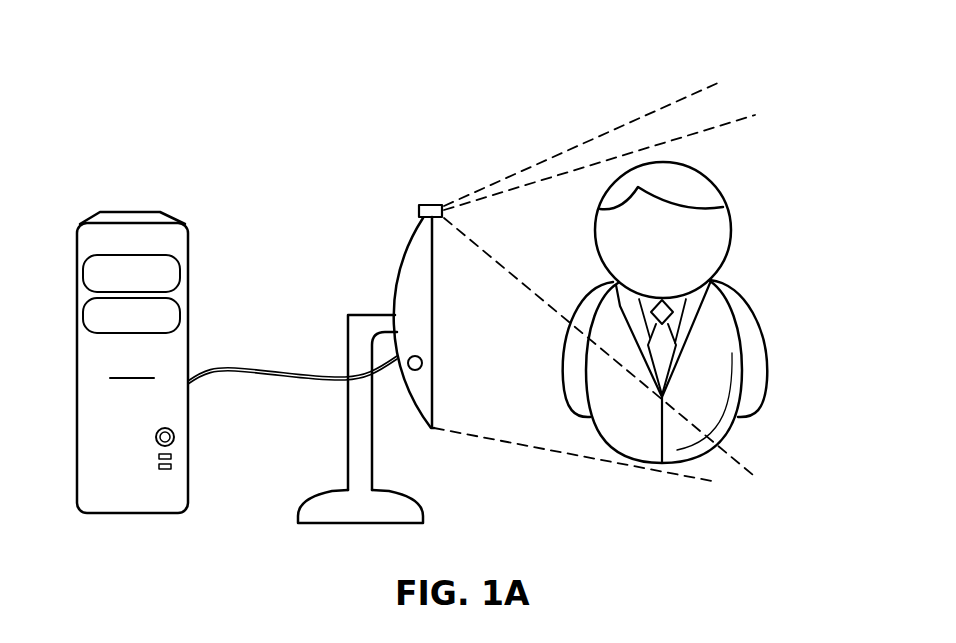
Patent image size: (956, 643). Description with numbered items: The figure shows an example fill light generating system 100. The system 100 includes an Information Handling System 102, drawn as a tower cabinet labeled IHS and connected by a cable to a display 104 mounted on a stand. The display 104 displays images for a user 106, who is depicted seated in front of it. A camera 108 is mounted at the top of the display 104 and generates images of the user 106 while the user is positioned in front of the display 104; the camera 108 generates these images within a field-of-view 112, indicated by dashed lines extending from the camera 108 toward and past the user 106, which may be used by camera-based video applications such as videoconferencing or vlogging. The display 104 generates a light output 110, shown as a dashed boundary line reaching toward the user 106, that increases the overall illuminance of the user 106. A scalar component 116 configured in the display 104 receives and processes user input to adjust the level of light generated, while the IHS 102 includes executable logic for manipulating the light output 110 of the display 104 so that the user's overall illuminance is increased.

The fill light generating system 100 is at (735, 48).
The Information Handling System 102 is at (132, 362).
The display 104 is at (407, 253).
The user 106 is at (705, 178).
The camera 108 is at (432, 205).
The light output 110 is at (606, 452).
The field-of-view 112 is at (738, 468).
The scalar component 116 is at (422, 362).